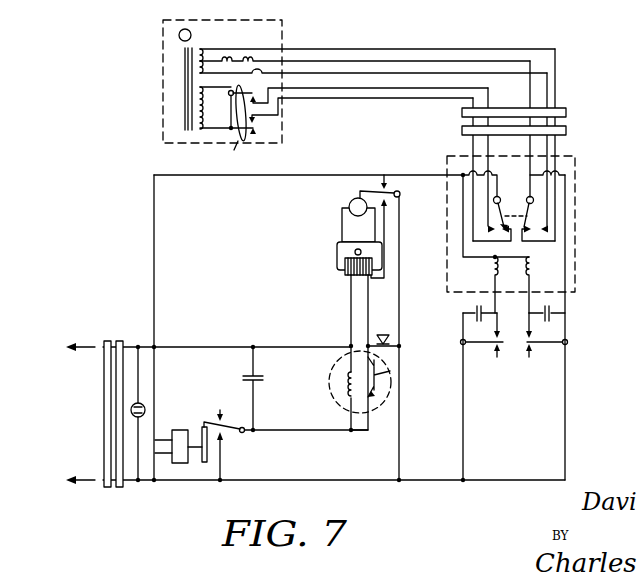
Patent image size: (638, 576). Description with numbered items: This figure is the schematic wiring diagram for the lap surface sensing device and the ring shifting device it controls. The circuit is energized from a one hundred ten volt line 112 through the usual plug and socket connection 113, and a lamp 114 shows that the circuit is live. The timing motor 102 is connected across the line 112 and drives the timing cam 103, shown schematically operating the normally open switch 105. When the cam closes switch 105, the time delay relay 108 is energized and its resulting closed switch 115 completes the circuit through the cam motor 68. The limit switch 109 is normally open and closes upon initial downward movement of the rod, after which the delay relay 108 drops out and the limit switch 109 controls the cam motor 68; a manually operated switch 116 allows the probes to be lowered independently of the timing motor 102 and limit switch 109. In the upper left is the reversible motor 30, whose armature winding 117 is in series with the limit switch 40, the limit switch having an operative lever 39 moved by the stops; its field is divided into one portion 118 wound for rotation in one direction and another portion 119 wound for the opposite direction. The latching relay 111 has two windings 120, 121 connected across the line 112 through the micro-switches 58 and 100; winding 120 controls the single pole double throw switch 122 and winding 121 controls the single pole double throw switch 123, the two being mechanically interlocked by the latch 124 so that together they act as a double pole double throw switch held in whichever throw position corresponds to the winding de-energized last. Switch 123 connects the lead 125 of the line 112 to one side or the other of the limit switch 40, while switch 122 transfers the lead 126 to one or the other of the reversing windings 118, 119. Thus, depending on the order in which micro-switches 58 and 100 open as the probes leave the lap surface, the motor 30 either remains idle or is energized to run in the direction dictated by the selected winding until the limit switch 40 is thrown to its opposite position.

The reversible motor 30 is at (158, 97).
The operative lever 39 is at (235, 128).
The limit switch 40 is at (259, 136).
The micro-switch 58 is at (548, 348).
The cam motor 68 is at (338, 273).
The micro-switch 100 is at (491, 347).
The timing motor 102 is at (176, 430).
The timing cam 103 is at (204, 464).
The switch 105 is at (241, 426).
The time delay relay 108 is at (345, 386).
The limit switch 109 is at (362, 186).
The latching relay 111 is at (582, 242).
The line 112 is at (92, 478).
The plug and socket connection 113 is at (110, 336).
The lamp 114 is at (142, 402).
The switch 115 is at (390, 371).
The manually operated switch 116 is at (389, 335).
The armature winding 117 is at (197, 110).
The field winding portion 118 is at (197, 69).
The field winding portion 119 is at (197, 58).
The relay winding 120 is at (541, 271).
The relay winding 121 is at (491, 274).
The single pole double throw switch 122 is at (537, 208).
The single pole double throw switch 123 is at (494, 208).
The latch 124 is at (511, 214).
The lead 125 is at (392, 176).
The lead 126 is at (565, 419).